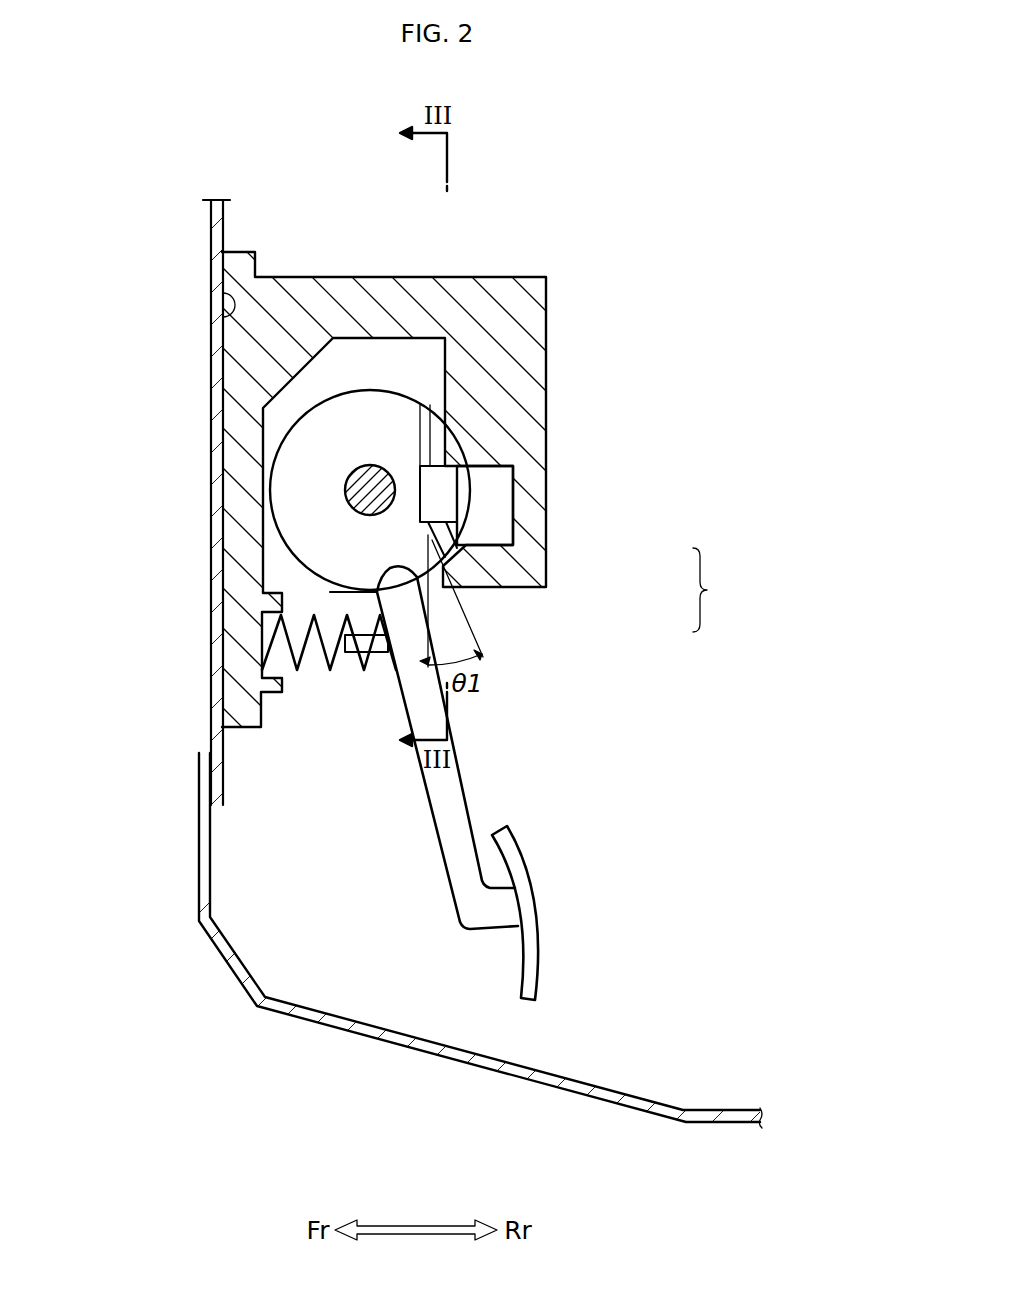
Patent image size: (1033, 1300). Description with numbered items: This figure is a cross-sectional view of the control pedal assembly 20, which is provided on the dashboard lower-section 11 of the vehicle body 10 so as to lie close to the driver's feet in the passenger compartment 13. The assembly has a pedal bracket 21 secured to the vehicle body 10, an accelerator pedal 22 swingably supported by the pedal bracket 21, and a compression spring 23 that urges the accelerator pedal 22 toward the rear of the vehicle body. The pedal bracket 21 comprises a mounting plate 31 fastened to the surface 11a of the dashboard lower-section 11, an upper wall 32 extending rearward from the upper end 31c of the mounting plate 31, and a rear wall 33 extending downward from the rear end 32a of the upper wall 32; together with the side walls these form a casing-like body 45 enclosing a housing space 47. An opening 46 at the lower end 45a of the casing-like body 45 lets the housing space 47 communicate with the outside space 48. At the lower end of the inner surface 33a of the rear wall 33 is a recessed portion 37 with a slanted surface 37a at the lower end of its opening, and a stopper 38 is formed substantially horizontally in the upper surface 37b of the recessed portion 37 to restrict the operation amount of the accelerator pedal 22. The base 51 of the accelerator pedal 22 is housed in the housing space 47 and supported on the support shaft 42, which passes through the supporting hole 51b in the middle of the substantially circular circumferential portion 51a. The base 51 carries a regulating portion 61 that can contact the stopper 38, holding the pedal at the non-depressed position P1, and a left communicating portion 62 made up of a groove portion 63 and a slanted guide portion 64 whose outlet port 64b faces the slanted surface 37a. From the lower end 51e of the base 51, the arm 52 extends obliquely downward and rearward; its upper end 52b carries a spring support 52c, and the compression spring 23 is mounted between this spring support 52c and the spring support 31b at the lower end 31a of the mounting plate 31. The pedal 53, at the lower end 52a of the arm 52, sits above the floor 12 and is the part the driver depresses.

The vehicle body 10 is at (605, 167).
The dashboard lower-section 11 is at (210, 352).
The surface of the dashboard lower-section 11a is at (226, 298).
The floor 12 is at (565, 1080).
The passenger compartment 13 is at (734, 701).
The control pedal assembly 20 is at (578, 318).
The pedal bracket 21 is at (553, 418).
The accelerator pedal 22 is at (475, 775).
The compression spring 23 is at (320, 680).
The mounting plate 31 is at (262, 532).
The lower end of the mounting plate 31a is at (240, 713).
The spring support 31b is at (272, 695).
The upper end of the mounting plate 31c is at (240, 258).
The upper wall 32 is at (372, 290).
The rear end of the upper wall 32a is at (490, 282).
The rear wall 33 is at (548, 362).
The inner surface of the rear wall 33a is at (445, 385).
The recessed portion 37 is at (520, 500).
The slanted surface 37a is at (520, 585).
The upper surface of the recessed portion 37b is at (520, 480).
The stopper 38 is at (450, 492).
The support shaft 42 is at (360, 475).
The casing-like body 45 is at (568, 292).
The lower end of the casing-like body 45a is at (485, 640).
The opening 46 is at (445, 580).
The housing space 47 is at (350, 358).
The outside space 48 is at (370, 1005).
The base 51 is at (295, 450).
The circumferential portion 51a is at (268, 555).
The supporting hole 51b is at (345, 485).
The lower end of the base 51e is at (327, 593).
The arm 52 is at (440, 805).
The lower end of the arm 52a is at (510, 898).
The upper end of the arm 52b is at (403, 665).
The spring support 52c is at (367, 660).
The pedal 53 is at (535, 930).
The regulating portion 61 is at (462, 462).
The left communicating portion 62 is at (715, 590).
The groove portion 63 is at (520, 547).
The slanted guide portion 64 is at (540, 595).
The outlet port 64b is at (428, 565).
The pedal non-depressed position P1 is at (463, 933).